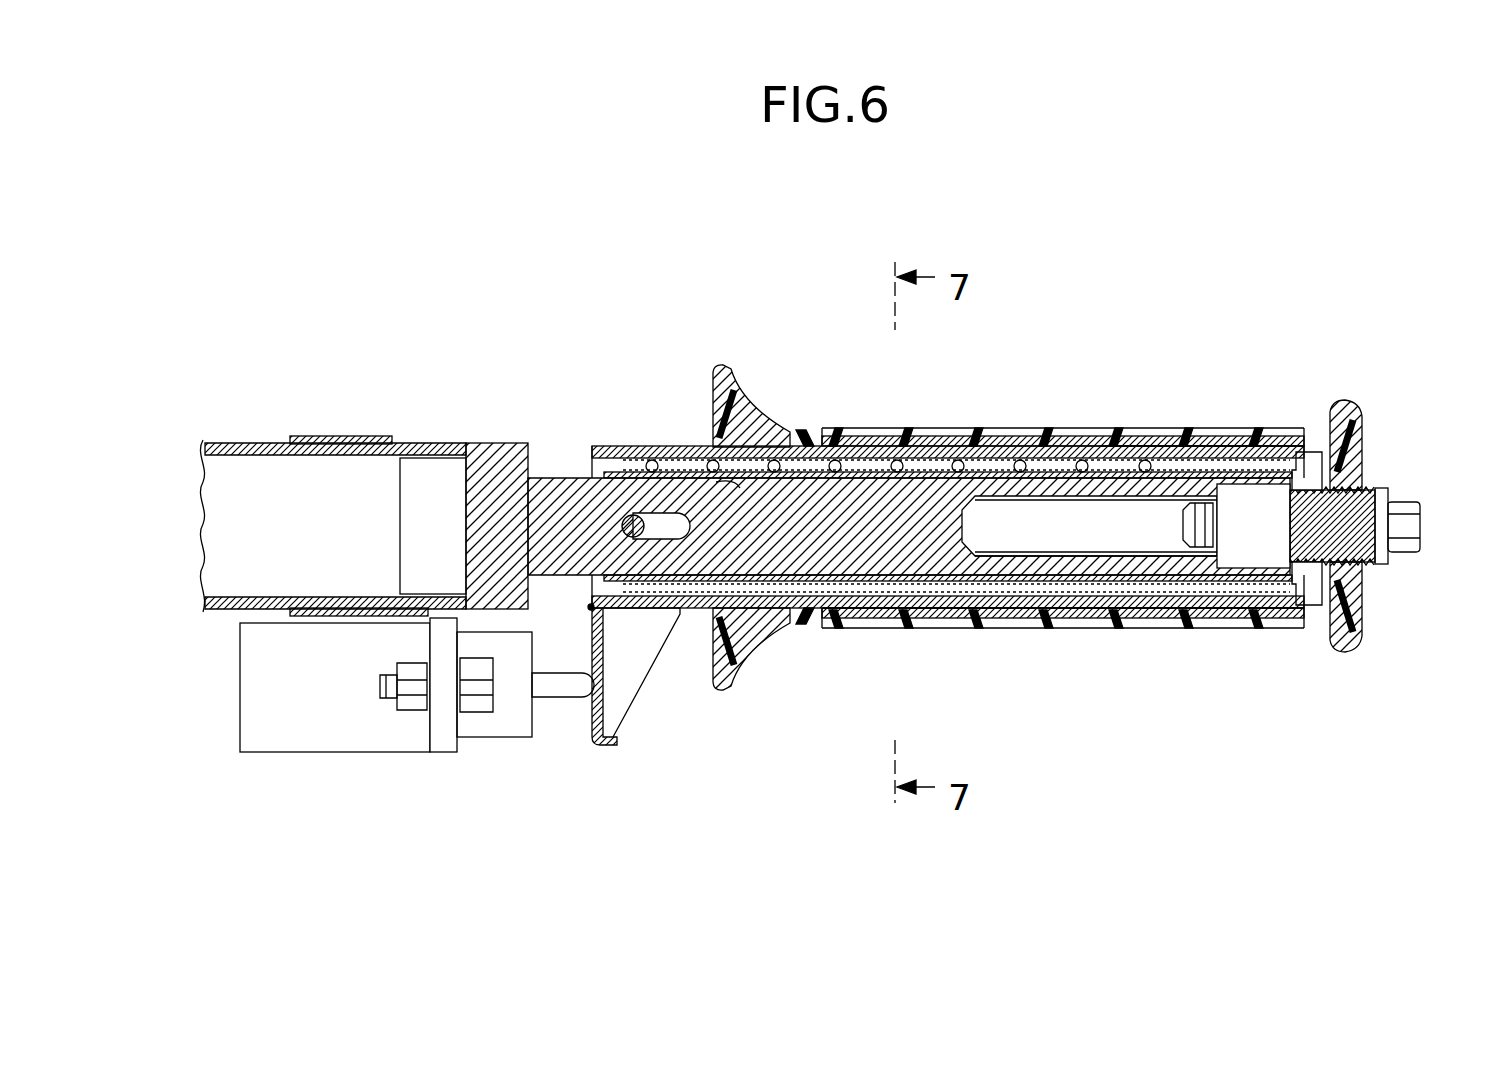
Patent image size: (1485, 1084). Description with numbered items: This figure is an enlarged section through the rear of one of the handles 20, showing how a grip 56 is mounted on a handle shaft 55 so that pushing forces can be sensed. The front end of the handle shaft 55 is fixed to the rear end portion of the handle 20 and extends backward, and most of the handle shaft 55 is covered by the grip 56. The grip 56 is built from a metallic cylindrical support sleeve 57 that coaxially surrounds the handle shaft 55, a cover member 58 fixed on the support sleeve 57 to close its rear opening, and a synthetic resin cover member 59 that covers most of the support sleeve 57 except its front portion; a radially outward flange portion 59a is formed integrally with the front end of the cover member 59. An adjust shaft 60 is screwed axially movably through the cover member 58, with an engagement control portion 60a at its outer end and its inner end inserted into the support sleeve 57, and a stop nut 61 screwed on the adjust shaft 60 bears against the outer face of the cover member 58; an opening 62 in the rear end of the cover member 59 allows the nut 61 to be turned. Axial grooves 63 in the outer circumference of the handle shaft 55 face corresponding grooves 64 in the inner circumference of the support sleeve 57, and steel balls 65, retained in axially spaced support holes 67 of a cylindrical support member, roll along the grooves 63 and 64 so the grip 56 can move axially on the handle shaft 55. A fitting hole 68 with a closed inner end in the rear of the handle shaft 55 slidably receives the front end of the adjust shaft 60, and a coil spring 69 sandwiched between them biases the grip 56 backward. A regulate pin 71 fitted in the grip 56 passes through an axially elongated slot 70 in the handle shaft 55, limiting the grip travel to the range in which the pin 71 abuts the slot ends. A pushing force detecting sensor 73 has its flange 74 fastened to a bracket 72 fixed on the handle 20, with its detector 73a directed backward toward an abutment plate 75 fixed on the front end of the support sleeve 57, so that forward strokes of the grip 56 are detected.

The handle 20 is at (262, 443).
The bracket 72 is at (360, 437).
The regulate pin 71 is at (628, 516).
The slot 70 is at (688, 540).
The support holes 67 is at (716, 482).
The handle shaft 55 is at (921, 492).
The grooves 63 is at (800, 452).
The steel balls 65 is at (895, 461).
The grooves 64 is at (1032, 446).
The grip 56 is at (1058, 447).
The cover member 59 is at (1160, 445).
The flange portion 59a is at (722, 374).
The adjust shaft 60 is at (1258, 500).
The opening 62 is at (1352, 465).
The engagement control portion 60a is at (1412, 552).
The stop nut 61 is at (1340, 602).
The cover member 58 is at (1288, 588).
The fitting hole 68 is at (1130, 556).
The support sleeve 57 is at (1055, 602).
The coil spring 69 is at (870, 612).
The pushing force detecting sensor 73 is at (345, 706).
The flange 74 is at (445, 728).
The detector 73a is at (565, 695).
The abutment plate 75 is at (590, 712).